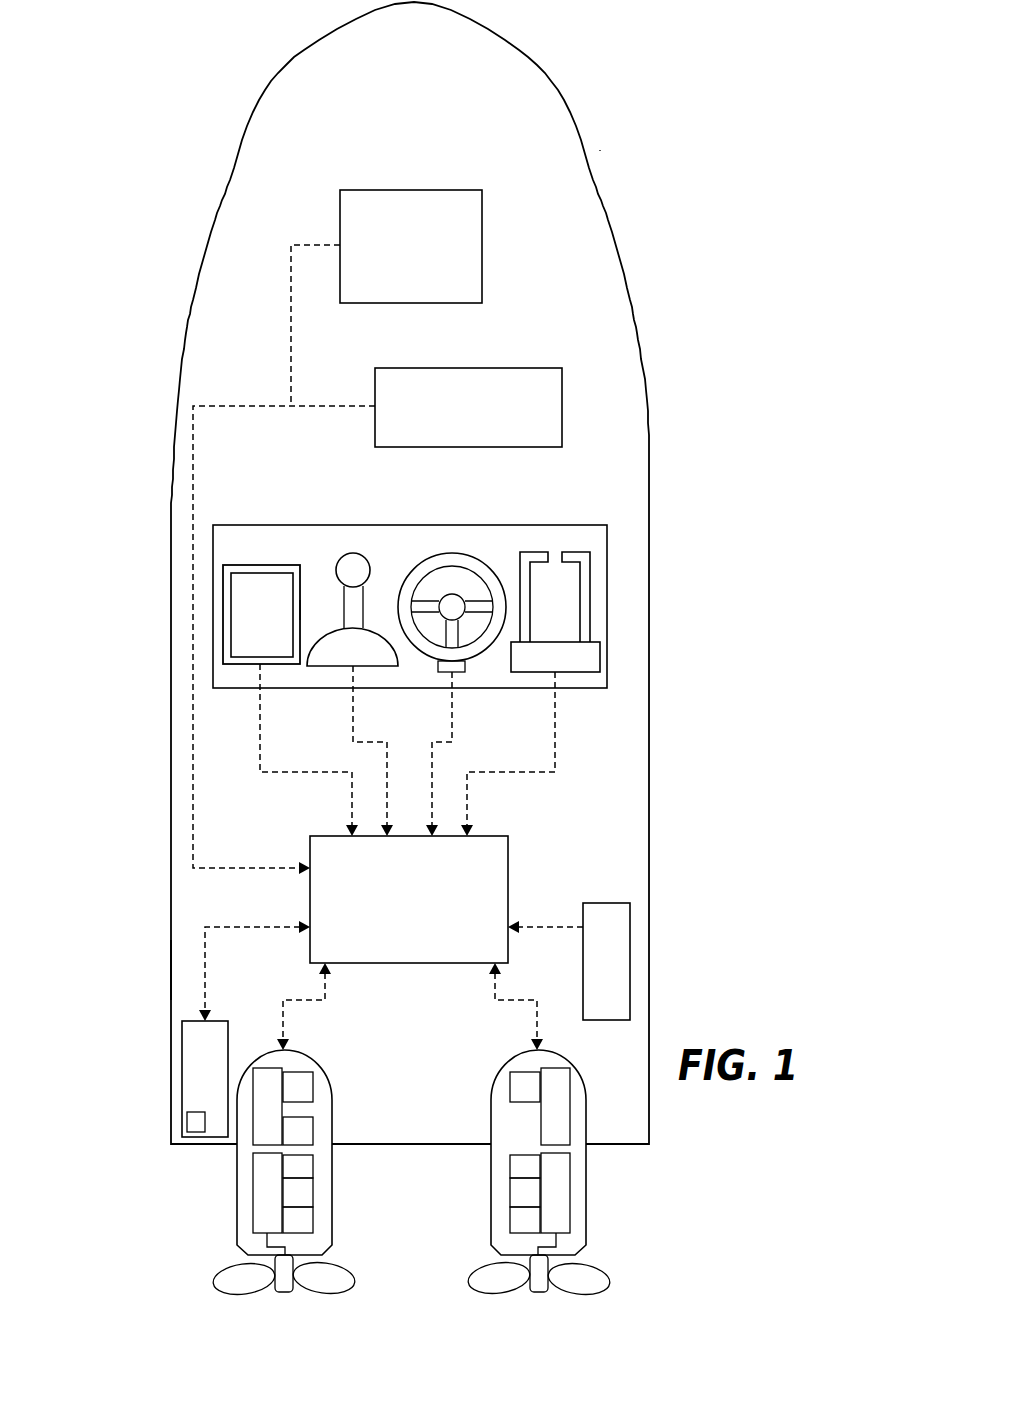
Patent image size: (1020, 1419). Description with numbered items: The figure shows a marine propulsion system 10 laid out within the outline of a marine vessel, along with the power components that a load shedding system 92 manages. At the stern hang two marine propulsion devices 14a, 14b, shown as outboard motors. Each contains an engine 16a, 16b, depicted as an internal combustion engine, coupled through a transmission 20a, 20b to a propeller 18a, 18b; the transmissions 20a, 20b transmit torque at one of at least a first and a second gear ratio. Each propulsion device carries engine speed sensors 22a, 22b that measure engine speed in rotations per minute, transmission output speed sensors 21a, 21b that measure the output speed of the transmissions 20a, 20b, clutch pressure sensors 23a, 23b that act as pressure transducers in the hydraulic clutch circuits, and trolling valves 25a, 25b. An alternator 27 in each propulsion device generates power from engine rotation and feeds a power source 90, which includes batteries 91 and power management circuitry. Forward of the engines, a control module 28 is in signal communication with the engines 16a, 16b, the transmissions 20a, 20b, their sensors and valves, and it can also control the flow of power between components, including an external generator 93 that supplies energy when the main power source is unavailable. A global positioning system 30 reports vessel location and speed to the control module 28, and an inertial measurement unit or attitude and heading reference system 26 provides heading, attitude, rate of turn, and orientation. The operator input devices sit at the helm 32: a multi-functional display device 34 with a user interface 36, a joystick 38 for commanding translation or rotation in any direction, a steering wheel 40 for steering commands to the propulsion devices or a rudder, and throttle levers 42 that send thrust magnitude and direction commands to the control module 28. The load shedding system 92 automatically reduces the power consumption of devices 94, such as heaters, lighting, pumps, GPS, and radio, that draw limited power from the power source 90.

The marine propulsion system 10 is at (624, 821).
The marine propulsion device 14a is at (351, 1136).
The marine propulsion device 14b is at (547, 1134).
The engine 16a is at (255, 1122).
The engine 16b is at (568, 1122).
The propeller 18a is at (222, 1267).
The propeller 18b is at (601, 1268).
The transmission 20a is at (255, 1190).
The transmission 20b is at (568, 1190).
The transmission output speed sensor 21a is at (313, 1218).
The transmission output speed sensor 21b is at (510, 1218).
The engine speed sensor 22a is at (313, 1090).
The engine speed sensor 22b is at (510, 1090).
The clutch pressure sensor 23a is at (313, 1188).
The clutch pressure sensor 23b is at (510, 1188).
The trolling valve 25a is at (313, 1163).
The trolling valve 25b is at (510, 1163).
The inertial measurement unit or attitude and heading reference system 26 is at (481, 368).
The alternator 27 is at (313, 1128).
The control module 28 is at (508, 893).
The global positioning system 30 is at (417, 189).
The helm 32 is at (573, 525).
The multi-functional display device 34 is at (269, 564).
The user interface 36 is at (299, 608).
The joystick 38 is at (362, 556).
The steering wheel 40 is at (466, 555).
The throttle lever 42 is at (609, 579).
The power source 90 is at (198, 1053).
The batteries 91 is at (197, 1127).
The load shedding system 92 is at (158, 966).
The external generator 93 is at (630, 948).
The devices 94 is at (568, 212).